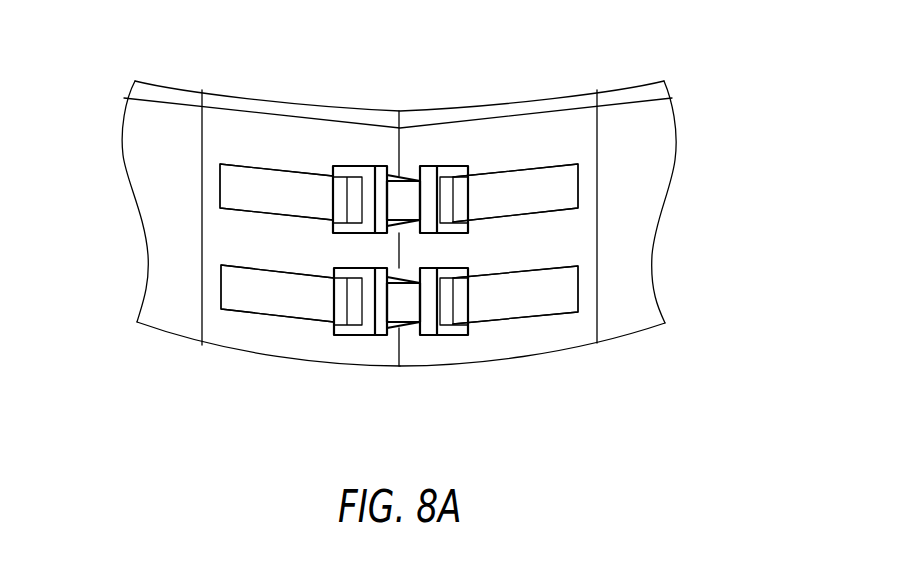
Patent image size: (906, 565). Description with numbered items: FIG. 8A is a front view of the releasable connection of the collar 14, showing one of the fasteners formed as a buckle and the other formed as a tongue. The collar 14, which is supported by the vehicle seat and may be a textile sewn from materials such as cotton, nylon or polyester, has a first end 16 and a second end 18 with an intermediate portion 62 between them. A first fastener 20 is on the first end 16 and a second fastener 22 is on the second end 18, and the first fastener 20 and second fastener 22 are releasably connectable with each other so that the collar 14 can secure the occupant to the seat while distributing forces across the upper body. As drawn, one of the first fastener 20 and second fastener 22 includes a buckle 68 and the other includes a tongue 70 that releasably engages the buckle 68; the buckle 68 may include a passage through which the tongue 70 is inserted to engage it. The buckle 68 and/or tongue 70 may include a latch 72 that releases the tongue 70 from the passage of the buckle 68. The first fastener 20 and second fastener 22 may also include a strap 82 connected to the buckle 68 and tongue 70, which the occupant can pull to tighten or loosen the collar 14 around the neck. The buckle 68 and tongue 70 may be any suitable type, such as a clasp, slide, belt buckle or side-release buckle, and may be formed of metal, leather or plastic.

The collar 14 is at (481, 78).
The first end 16 is at (508, 137).
The second end 18 is at (283, 132).
The first fastener 20 is at (588, 185).
The second fastener 22 is at (213, 186).
The intermediate portion 62 is at (173, 253).
The buckle 68 is at (422, 195).
The tongue 70 is at (358, 197).
The latch 72 is at (397, 174).
The strap 82 is at (248, 185).